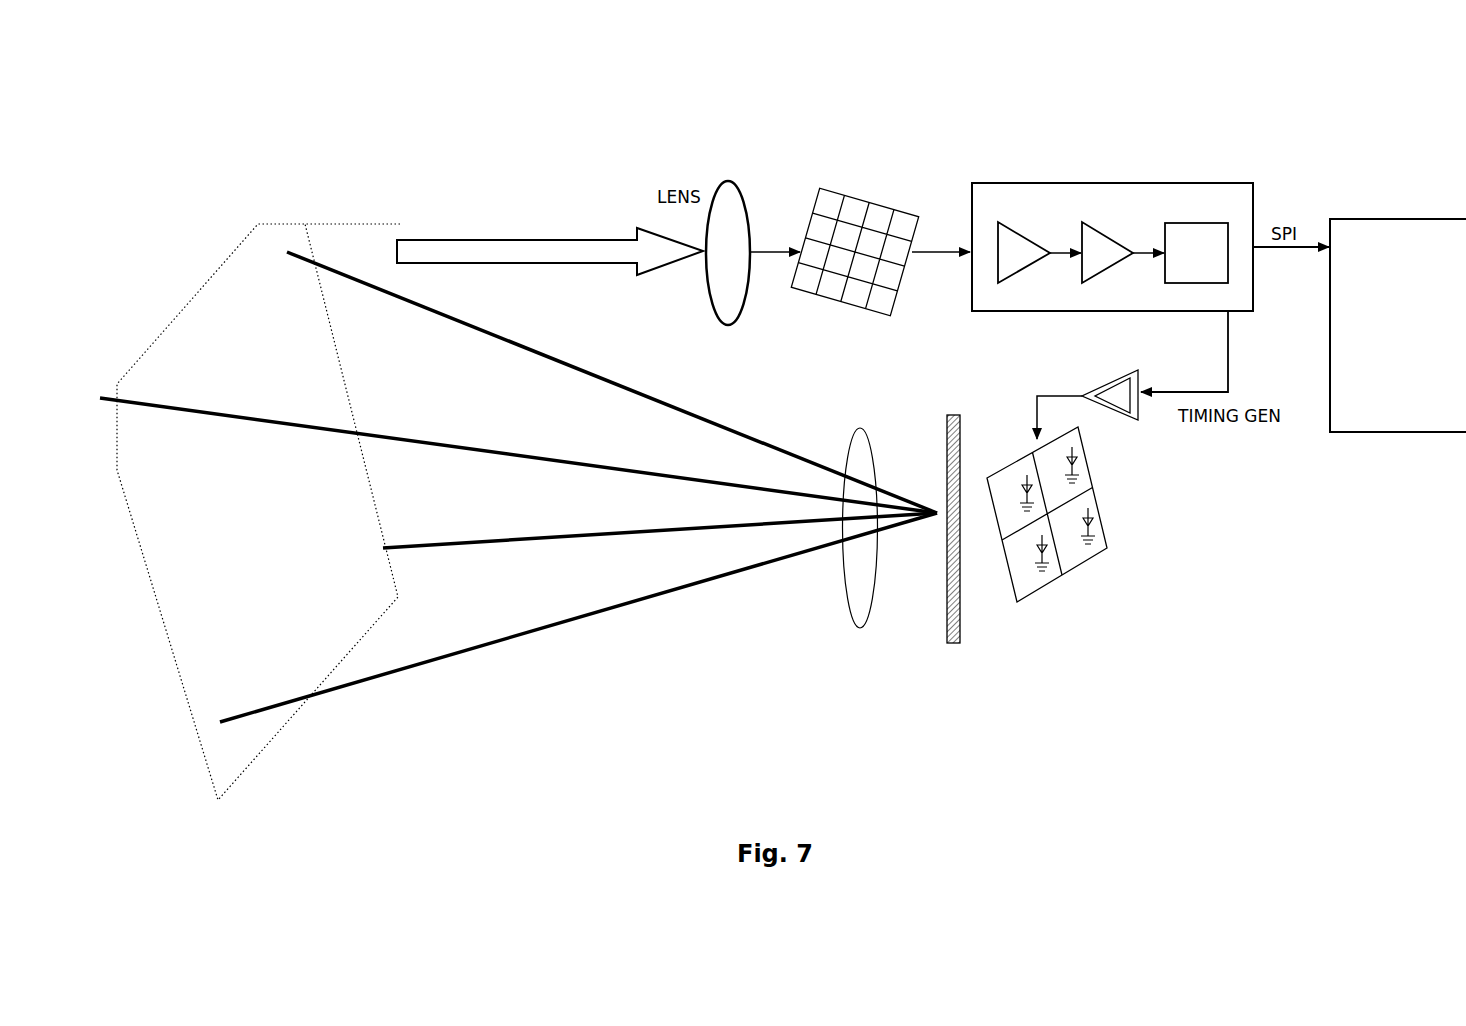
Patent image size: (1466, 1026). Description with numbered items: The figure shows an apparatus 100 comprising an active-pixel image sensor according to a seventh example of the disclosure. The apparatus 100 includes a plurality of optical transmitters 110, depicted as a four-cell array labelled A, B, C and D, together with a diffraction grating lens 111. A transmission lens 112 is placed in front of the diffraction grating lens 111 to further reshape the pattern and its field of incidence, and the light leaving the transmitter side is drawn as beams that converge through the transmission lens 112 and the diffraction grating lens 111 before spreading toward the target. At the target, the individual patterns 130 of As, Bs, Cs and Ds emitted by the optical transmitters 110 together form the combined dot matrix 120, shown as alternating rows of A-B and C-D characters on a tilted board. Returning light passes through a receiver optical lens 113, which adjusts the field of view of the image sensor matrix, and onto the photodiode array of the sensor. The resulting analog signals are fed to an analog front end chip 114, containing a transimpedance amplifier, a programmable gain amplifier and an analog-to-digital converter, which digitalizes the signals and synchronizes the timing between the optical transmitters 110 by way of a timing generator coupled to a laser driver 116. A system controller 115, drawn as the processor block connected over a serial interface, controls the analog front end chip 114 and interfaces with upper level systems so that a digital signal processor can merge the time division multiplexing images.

The apparatus 100 is at (168, 184).
The optical transmitters 110 is at (900, 207).
The diffraction grating lens 111 is at (960, 622).
The transmission lens 112 is at (857, 628).
The receiver optical lens 113 is at (728, 181).
The analog front end chip 114 is at (1157, 183).
The system controller 115 is at (1365, 219).
The laser driver 116 is at (1122, 421).
The combined dot matrix 120 is at (313, 265).
The individual patterns 130 is at (1077, 575).